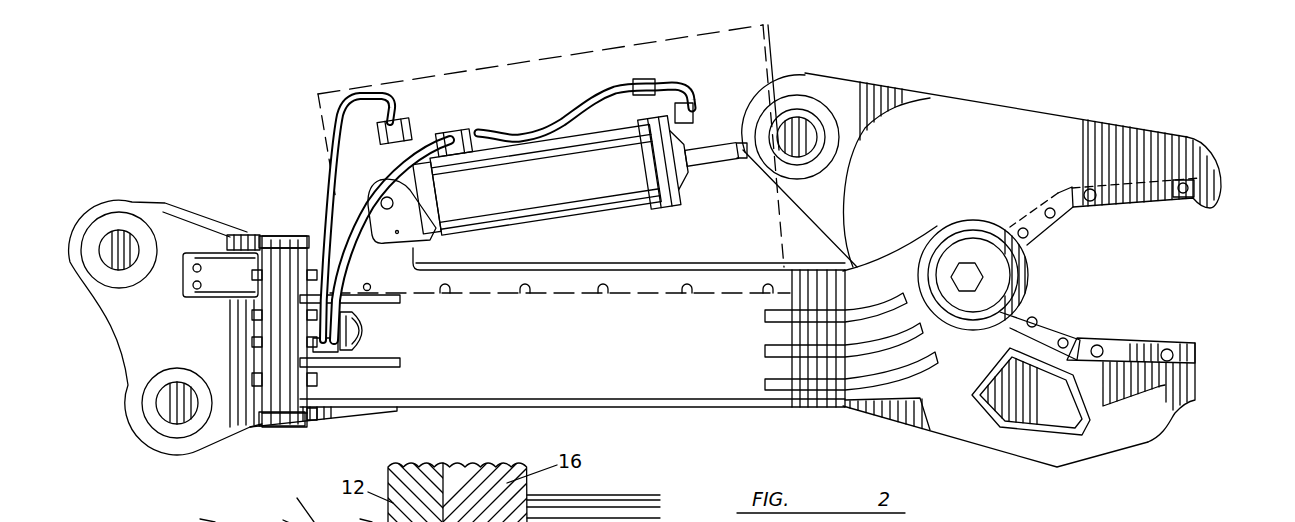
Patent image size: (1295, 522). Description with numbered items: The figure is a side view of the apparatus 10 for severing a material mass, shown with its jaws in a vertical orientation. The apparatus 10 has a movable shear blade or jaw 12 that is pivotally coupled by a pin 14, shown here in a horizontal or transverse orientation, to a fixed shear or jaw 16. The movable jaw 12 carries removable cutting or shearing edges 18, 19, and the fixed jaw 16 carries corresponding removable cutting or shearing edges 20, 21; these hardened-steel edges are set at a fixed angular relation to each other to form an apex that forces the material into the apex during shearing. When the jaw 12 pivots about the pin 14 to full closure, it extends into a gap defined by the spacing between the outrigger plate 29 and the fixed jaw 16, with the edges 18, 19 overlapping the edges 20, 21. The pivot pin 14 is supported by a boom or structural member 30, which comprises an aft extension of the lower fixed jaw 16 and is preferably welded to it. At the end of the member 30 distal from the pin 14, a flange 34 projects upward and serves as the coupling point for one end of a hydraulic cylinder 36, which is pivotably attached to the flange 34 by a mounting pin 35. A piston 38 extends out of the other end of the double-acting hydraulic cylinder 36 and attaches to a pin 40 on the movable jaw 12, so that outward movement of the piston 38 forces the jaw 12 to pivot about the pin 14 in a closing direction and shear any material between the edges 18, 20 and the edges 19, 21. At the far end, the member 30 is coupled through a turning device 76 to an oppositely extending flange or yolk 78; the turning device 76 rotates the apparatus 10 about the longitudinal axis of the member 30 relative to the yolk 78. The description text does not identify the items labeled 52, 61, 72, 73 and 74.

The apparatus 10 is at (1112, 118).
The movable shear blade or jaw 12 is at (1197, 170).
The pin 14 is at (985, 280).
The fixed shear or jaw 16 is at (1163, 403).
The cutting or shearing edge 18 is at (1050, 228).
The cutting or shearing edge 19 is at (1133, 198).
The cutting or shearing edge 20 is at (1047, 320).
The cutting or shearing edge 21 is at (1133, 337).
The outrigger plate 29 is at (1095, 415).
The boom or structural member 30 is at (670, 373).
The flange 34 is at (343, 200).
The mounting pin 35 is at (408, 228).
The hydraulic cylinder 36 is at (585, 208).
The piston 38 is at (723, 130).
The pin 40 is at (813, 103).
The bushing 52 is at (1027, 260).
The jaw element 61 is at (355, 515).
The jaw element 72 is at (291, 500).
The jaw element 73 is at (274, 515).
The jaw element 74 is at (197, 516).
The turning device 76 is at (283, 237).
The flange or yolk 78 is at (173, 418).